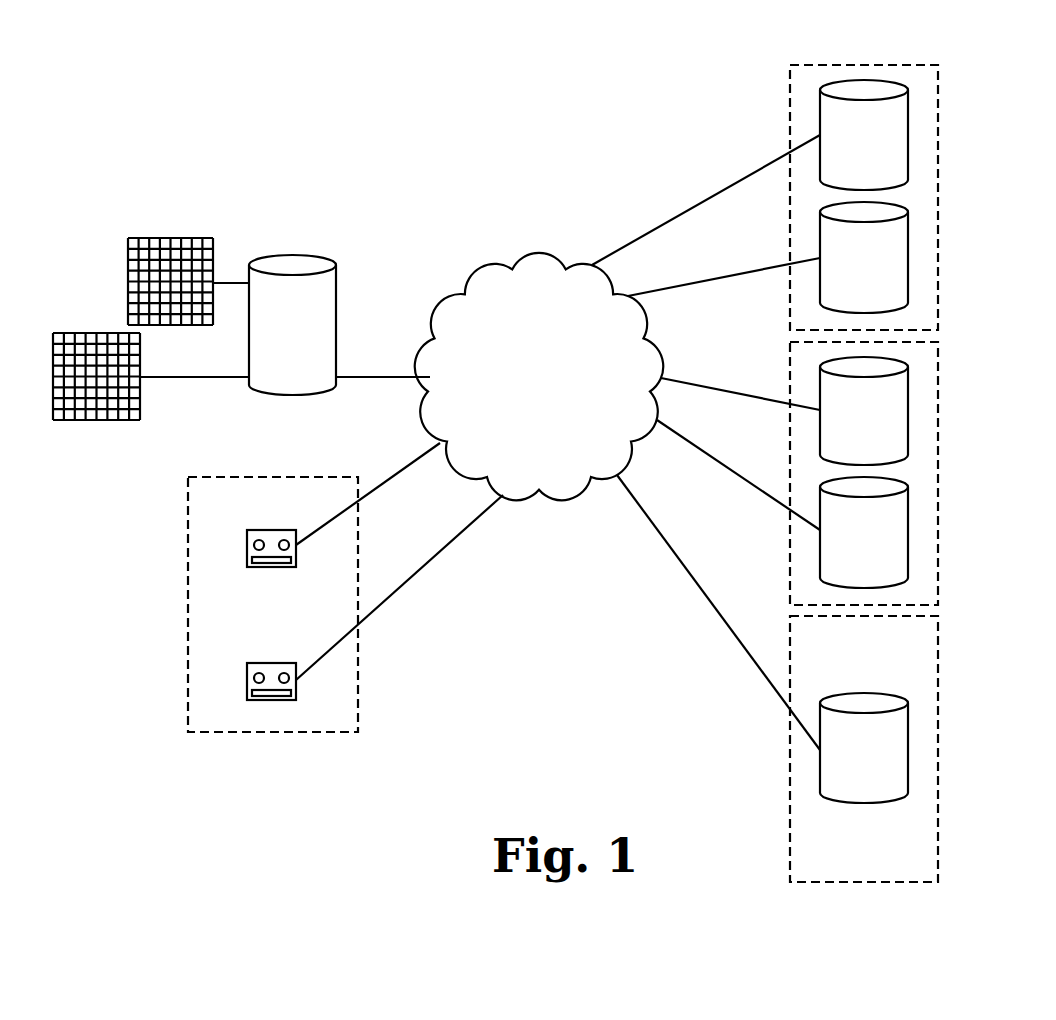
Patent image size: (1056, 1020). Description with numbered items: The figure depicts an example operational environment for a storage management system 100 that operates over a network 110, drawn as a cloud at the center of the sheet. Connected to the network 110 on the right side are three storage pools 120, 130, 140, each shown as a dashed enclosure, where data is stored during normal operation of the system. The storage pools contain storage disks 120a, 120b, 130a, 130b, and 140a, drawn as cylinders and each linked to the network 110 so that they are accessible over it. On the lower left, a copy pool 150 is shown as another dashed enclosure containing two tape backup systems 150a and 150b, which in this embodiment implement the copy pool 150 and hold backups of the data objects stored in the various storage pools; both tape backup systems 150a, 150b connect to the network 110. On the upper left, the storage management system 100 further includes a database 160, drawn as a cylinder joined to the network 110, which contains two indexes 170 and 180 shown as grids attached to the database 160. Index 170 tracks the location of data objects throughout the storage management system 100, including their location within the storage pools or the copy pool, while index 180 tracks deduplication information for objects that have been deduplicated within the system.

The storage management system 100 is at (112, 133).
The network 110 is at (533, 255).
The storage pool 120 is at (938, 90).
The storage disk 120a is at (908, 128).
The storage disk 120b is at (908, 260).
The storage pool 130 is at (938, 367).
The storage disk 130a is at (908, 404).
The storage disk 130b is at (908, 537).
The storage pool 140 is at (938, 642).
The storage disk 140a is at (908, 742).
The copy pool 150 is at (270, 477).
The tape backup system 150a is at (272, 530).
The tape backup system 150b is at (272, 663).
The database 160 is at (289, 263).
The index 170 is at (165, 238).
The index 180 is at (88, 333).